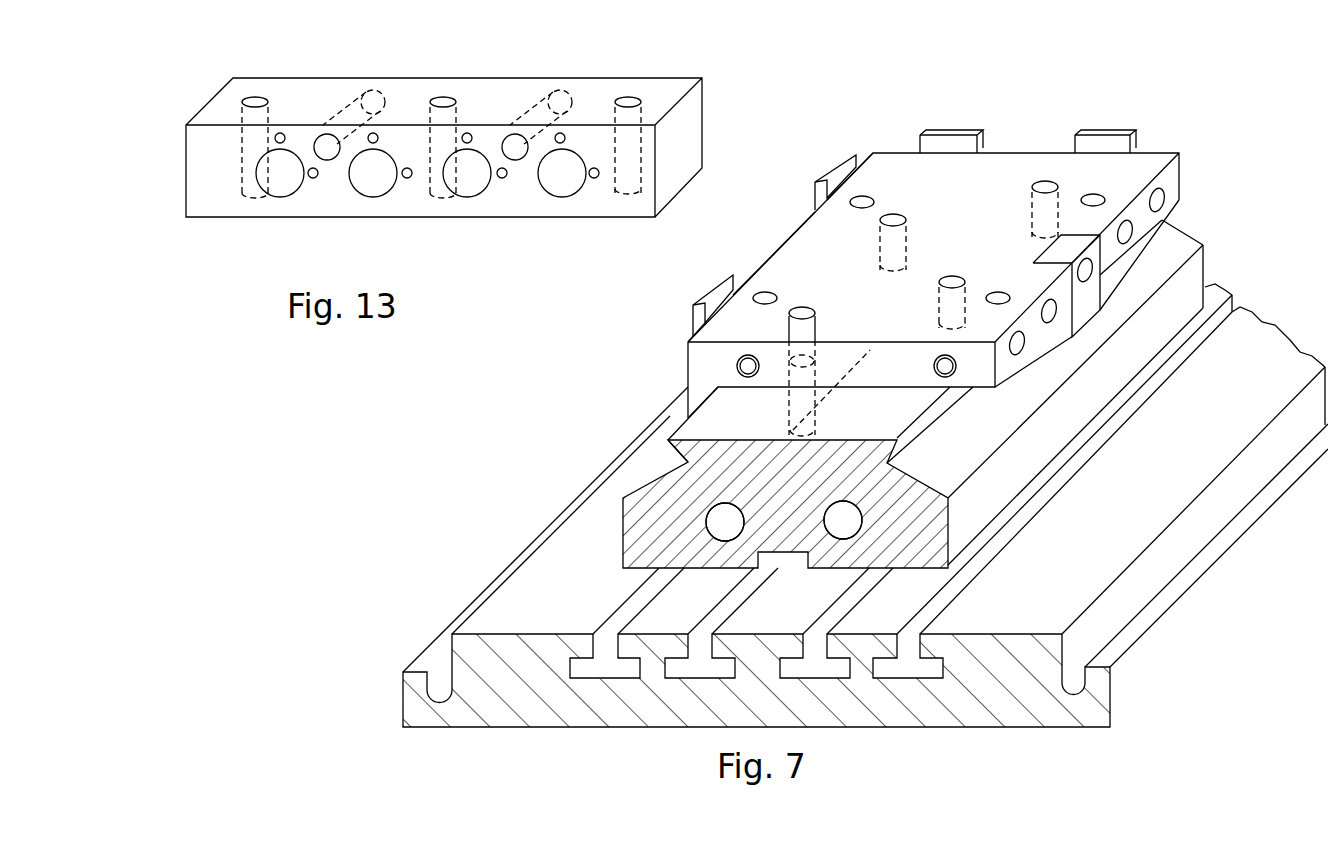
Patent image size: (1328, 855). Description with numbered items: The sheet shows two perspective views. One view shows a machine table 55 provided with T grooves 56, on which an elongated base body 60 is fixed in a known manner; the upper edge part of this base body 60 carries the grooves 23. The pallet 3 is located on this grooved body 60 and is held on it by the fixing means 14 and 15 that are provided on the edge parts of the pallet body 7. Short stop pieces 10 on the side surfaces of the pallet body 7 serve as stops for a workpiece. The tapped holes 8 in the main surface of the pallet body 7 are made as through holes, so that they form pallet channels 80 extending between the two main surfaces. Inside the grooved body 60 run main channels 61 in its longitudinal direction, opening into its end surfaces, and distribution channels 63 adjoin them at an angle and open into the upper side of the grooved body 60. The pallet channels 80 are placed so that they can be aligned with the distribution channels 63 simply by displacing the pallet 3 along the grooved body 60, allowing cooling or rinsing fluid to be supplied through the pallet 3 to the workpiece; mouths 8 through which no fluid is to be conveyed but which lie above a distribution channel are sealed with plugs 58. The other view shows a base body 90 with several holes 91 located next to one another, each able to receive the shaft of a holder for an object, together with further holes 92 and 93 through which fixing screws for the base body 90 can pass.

In FIG. 7, the pallet 3 is at (890, 133).
In FIG. 7, the pallet body 7 is at (800, 225).
In FIG. 7, the tapped holes 8 is at (803, 310).
In FIG. 7, the stops 10 is at (830, 170).
In FIG. 7, the fixing means 14 is at (695, 378).
In FIG. 7, the fixing means 15 is at (1083, 305).
In FIG. 7, the grooves 23 is at (677, 465).
In FIG. 7, the machine table 55 is at (548, 583).
In FIG. 7, the T grooves 56 is at (625, 607).
In FIG. 7, the plugs 58 is at (896, 216).
In FIG. 7, the base body 60 is at (643, 483).
In FIG. 7, the main channels 61 is at (730, 515).
In FIG. 7, the distribution channels 63 is at (797, 417).
In FIG. 7, the pallet channels 80 is at (797, 340).
In FIG. 13, the base body 90 is at (357, 220).
In FIG. 13, the holes 91 is at (280, 173).
In FIG. 13, the holes 92 is at (515, 150).
In FIG. 13, the holes 93 is at (257, 100).